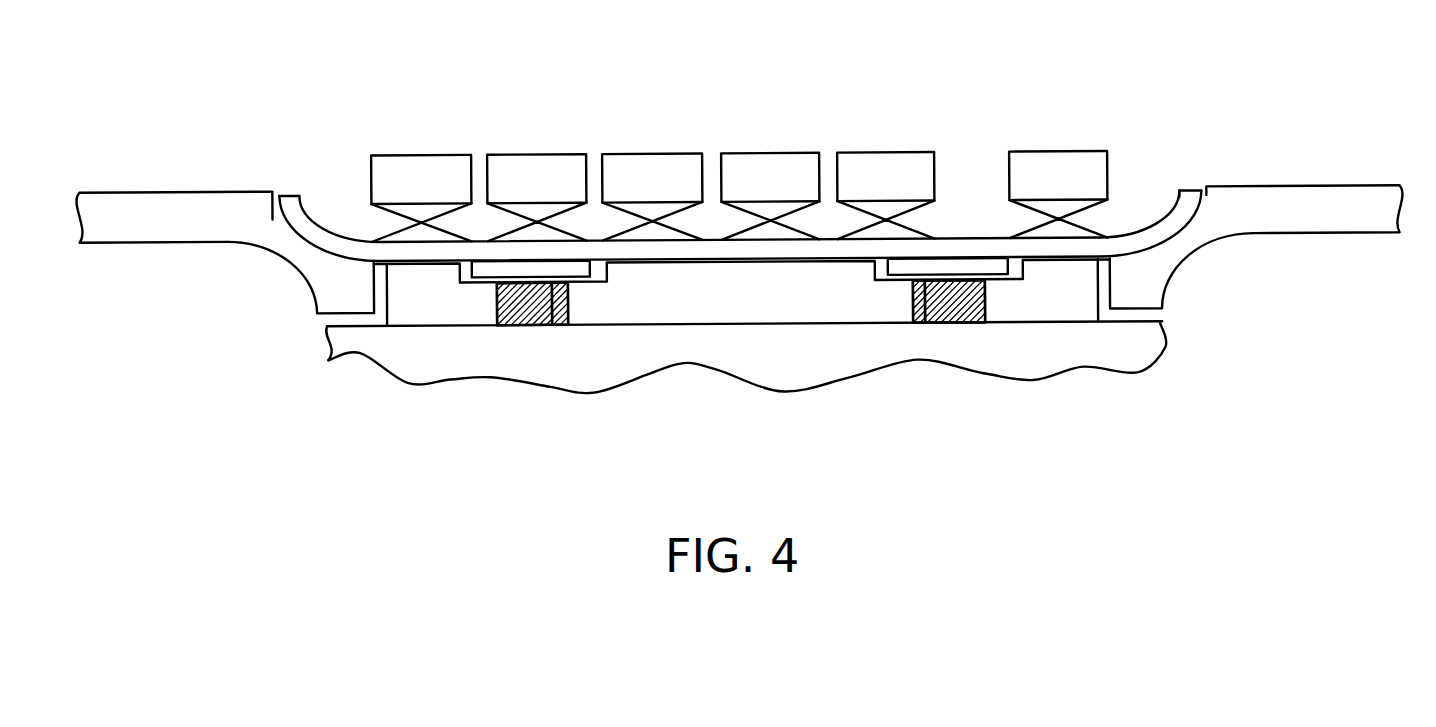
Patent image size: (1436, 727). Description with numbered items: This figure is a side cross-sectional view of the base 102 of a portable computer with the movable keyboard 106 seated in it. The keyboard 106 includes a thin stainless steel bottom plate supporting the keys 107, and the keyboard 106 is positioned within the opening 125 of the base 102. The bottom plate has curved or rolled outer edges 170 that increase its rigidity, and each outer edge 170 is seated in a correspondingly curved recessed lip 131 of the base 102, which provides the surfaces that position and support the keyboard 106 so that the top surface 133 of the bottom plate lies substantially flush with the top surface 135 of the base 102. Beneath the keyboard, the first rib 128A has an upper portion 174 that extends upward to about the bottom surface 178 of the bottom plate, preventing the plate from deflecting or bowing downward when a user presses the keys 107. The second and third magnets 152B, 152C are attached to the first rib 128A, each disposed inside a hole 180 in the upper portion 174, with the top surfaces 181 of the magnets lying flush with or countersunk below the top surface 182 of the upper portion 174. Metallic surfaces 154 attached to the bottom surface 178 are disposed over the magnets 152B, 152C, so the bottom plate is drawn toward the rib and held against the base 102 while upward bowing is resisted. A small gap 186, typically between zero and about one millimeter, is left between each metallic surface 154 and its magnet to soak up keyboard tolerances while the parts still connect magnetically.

The base 102 is at (1352, 208).
The movable keyboard 106 is at (678, 100).
The keys 107 is at (768, 153).
The opening 125 is at (378, 293).
The first rib 128A is at (1093, 345).
The recessed lip 131 is at (337, 277).
The top surface of the bottom plate 133 is at (1188, 183).
The top surface of the base 135 is at (1284, 182).
The second magnet 152B is at (945, 290).
The third magnet 152C is at (517, 310).
The metallic surfaces 154 is at (480, 270).
The outer edge 170 is at (281, 220).
The upper portion 174 is at (703, 287).
The bottom surface 178 is at (801, 258).
The hole 180 is at (498, 302).
The top surfaces of the magnets 181 is at (552, 285).
The top surface of the upper portion 182 is at (590, 283).
The gap 186 is at (472, 283).